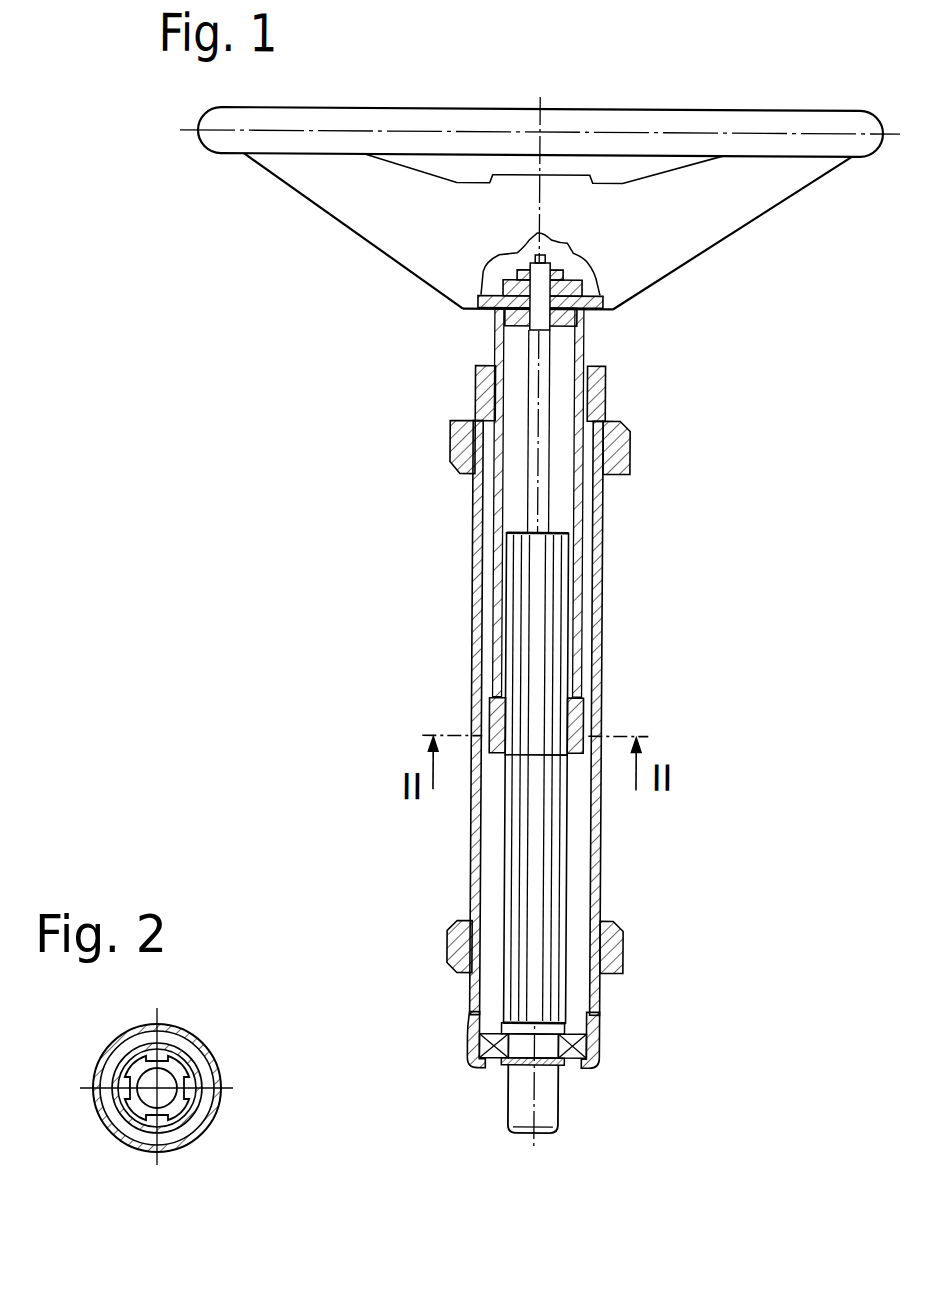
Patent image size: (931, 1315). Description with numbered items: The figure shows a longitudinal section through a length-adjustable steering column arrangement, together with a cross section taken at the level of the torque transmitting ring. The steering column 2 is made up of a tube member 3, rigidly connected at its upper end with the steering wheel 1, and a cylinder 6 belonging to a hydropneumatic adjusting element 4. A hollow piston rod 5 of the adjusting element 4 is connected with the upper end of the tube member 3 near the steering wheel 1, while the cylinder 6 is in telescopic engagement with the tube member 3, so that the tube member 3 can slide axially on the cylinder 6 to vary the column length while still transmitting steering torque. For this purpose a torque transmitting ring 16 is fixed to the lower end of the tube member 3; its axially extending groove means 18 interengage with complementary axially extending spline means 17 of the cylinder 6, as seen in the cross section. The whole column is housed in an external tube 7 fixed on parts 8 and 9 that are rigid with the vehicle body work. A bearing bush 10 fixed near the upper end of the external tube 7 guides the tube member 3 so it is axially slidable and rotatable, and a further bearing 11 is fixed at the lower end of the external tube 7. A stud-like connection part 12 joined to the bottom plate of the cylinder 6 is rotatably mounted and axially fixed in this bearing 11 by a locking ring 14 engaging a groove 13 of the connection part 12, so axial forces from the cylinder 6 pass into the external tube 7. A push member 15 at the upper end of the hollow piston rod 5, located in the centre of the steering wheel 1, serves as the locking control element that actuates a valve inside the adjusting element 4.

In FIG. 1, the steering wheel 1 is at (673, 230).
In FIG. 1, the steering column 2 is at (593, 338).
In FIG. 1, the tube member 3 is at (598, 528).
In FIG. 1, the hydropneumatic adjusting element 4 is at (575, 833).
In FIG. 1, the piston rod 5 is at (541, 410).
In FIG. 1, the cylinder 6 is at (541, 605).
In FIG. 1, the external tube 7 is at (603, 638).
In FIG. 2, the external tube 7 is at (220, 1070).
In FIG. 1, the body-rigid part 8 is at (616, 450).
In FIG. 1, the body-rigid part 9 is at (620, 935).
In FIG. 1, the bearing bush 10 is at (489, 393).
In FIG. 1, the bearing 11 is at (596, 1021).
In FIG. 1, the stud-like connection part 12 is at (536, 1047).
In FIG. 1, the groove 13 is at (543, 1067).
In FIG. 1, the locking ring 14 is at (598, 1067).
In FIG. 1, the push member 15 is at (501, 251).
In FIG. 1, the torque transmitting ring 16 is at (589, 716).
In FIG. 2, the torque transmitting ring 16 is at (193, 1110).
In FIG. 2, the spline means 17 is at (197, 1043).
In FIG. 2, the groove means 18 is at (117, 1072).